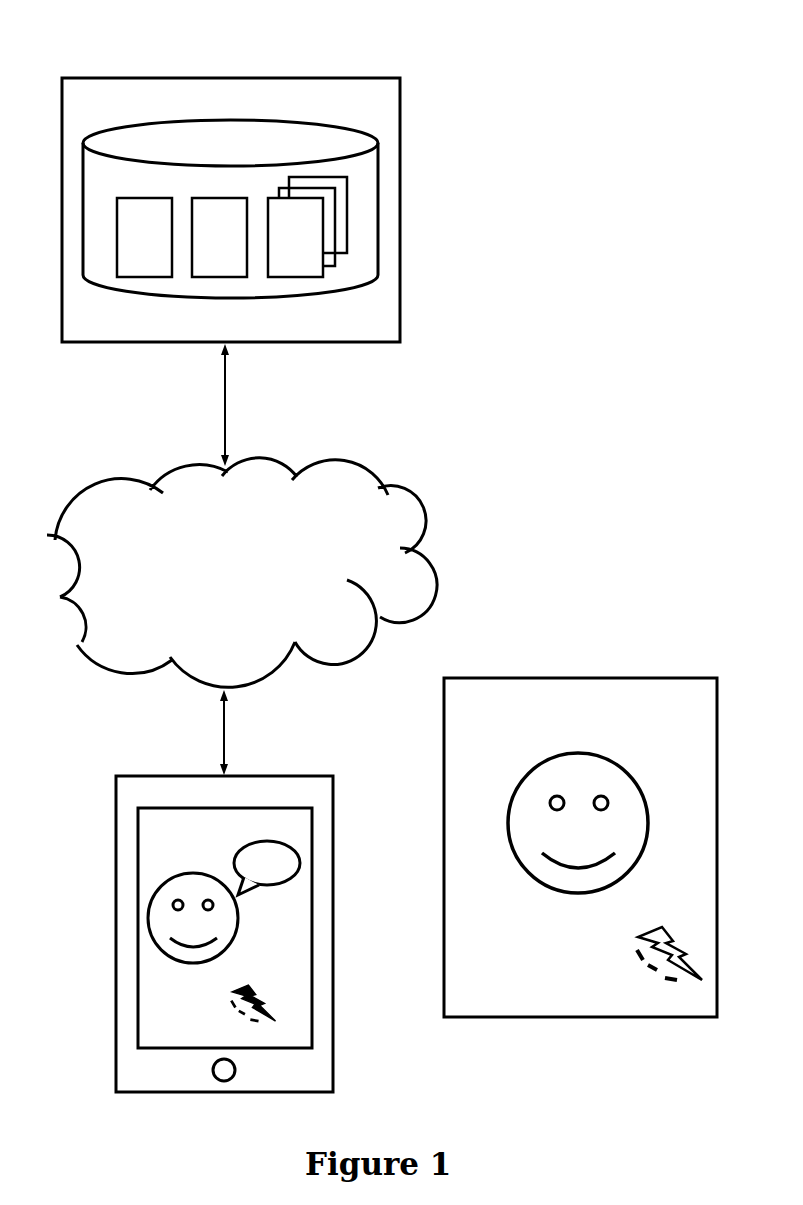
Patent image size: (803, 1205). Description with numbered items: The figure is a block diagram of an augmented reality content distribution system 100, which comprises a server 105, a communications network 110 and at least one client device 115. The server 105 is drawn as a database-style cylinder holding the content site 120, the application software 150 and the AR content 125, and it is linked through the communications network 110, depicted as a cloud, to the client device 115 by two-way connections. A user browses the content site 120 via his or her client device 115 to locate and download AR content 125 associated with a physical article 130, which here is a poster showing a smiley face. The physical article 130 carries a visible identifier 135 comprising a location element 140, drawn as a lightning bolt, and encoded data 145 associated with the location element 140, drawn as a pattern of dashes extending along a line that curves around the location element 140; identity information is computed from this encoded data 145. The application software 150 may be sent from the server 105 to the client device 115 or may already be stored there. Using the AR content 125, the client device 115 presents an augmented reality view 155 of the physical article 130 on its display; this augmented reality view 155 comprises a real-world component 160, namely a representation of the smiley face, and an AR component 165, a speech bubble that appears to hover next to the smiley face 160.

The augmented reality content distribution system 100 is at (637, 125).
The server 105 is at (231, 210).
The communications network 110 is at (250, 582).
The client device 115 is at (215, 914).
The content site 120 is at (165, 266).
The AR content 125 is at (316, 266).
The physical article 130 is at (580, 847).
The visible identifier 135 is at (676, 897).
The location element 140 is at (650, 933).
The encoded data 145 is at (643, 962).
The application software 150 is at (240, 266).
The augmented reality view 155 is at (179, 814).
The real-world component 160 is at (188, 952).
The AR component 165 is at (288, 855).